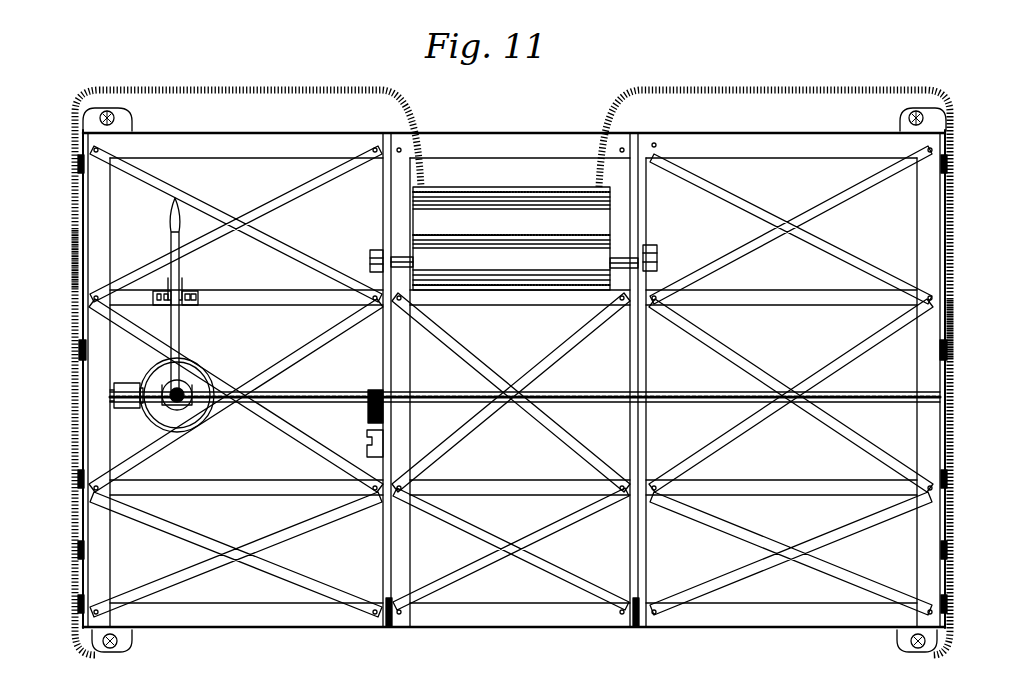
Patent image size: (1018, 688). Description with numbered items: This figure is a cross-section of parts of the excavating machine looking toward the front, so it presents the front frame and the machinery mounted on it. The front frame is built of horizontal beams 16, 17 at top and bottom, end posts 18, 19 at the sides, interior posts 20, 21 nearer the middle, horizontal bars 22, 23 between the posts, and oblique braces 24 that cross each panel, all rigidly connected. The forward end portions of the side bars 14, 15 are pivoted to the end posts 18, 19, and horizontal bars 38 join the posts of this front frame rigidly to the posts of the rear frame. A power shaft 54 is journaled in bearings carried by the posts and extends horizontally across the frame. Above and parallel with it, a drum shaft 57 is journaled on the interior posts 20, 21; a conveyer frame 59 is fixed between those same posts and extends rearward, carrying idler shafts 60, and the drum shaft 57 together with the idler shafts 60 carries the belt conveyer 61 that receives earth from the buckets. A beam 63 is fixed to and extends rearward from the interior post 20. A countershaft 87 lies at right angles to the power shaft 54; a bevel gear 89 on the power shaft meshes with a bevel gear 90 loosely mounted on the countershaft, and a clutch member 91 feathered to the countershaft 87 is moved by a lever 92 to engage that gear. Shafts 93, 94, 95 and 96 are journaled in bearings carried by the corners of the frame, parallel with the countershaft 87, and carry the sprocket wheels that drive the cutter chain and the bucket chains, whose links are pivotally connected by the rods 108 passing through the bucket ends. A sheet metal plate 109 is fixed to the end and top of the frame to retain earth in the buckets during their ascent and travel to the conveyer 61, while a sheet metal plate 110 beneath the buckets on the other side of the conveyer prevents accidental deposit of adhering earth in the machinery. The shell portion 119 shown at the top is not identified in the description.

The side bar 14 is at (78, 480).
The side bar 15 is at (78, 550).
The horizontal beam 16 is at (514, 146).
The horizontal beam 17 is at (514, 615).
The end post 18 is at (97, 379).
The end post 19 is at (931, 379).
The interior post 20 is at (399, 380).
The interior post 21 is at (633, 380).
The horizontal bar 22 is at (521, 292).
The horizontal bar 23 is at (513, 486).
The oblique brace 24 is at (262, 213).
The horizontal bar 38 is at (78, 165).
The power shaft 54 is at (343, 381).
The drum shaft 57 is at (413, 222).
The conveyer frame 59 is at (372, 248).
The idler shaft 60 is at (511, 260).
The belt conveyer 61 is at (517, 193).
The beam 63 is at (367, 419).
The countershaft 87 is at (190, 392).
The bevel gear 89 is at (128, 383).
The bevel gear 90 is at (156, 425).
The clutch member 91 is at (176, 408).
The lever 92 is at (180, 356).
The shaft 93 is at (115, 115).
The shaft 94 is at (909, 115).
The shaft 95 is at (911, 643).
The shaft 96 is at (117, 643).
The rod 108 is at (78, 258).
The sheet metal plate 109 is at (242, 88).
The sheet metal plate 110 is at (952, 328).
The shell top wall 119 is at (785, 88).